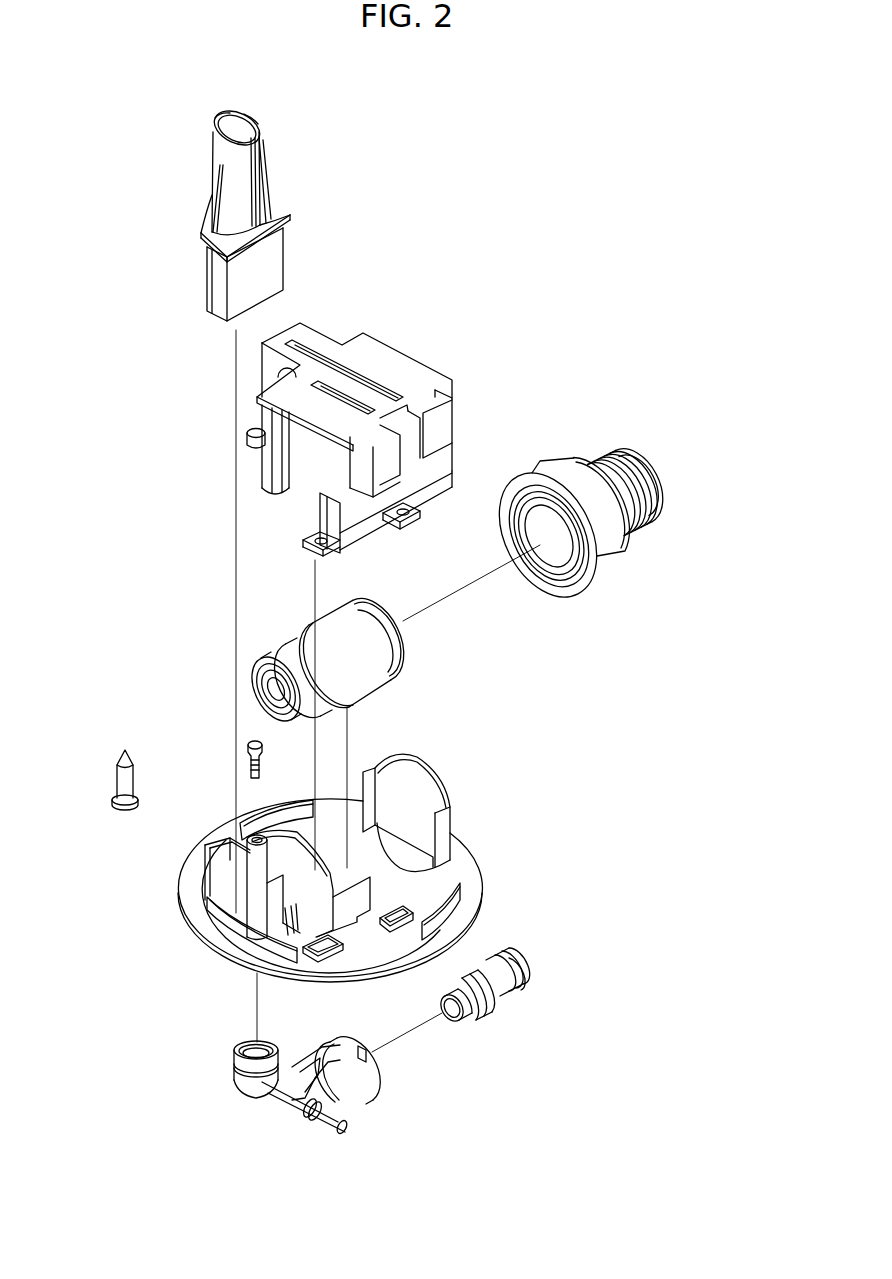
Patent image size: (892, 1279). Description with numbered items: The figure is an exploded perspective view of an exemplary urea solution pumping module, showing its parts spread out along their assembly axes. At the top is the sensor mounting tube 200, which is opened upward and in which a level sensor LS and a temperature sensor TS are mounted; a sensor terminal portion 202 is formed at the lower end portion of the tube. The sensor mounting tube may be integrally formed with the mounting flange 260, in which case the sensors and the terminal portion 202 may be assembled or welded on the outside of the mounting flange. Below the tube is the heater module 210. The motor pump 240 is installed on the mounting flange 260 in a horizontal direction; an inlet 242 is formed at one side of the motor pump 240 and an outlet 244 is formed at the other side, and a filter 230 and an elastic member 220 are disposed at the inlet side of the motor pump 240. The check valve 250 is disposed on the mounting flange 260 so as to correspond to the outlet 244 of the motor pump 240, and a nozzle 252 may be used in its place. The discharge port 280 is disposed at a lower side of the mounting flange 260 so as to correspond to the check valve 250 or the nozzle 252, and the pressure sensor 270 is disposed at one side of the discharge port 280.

The level sensor LS is at (222, 110).
The temperature sensor TS is at (252, 110).
The sensor mounting tube 200 is at (237, 198).
The sensor terminal portion 202 is at (218, 286).
The heater module 210 is at (397, 365).
The elastic member 220 is at (637, 455).
The filter 230 is at (602, 558).
The motor pump 240 is at (410, 664).
The inlet 242 is at (420, 625).
The outlet 244 is at (263, 693).
The check valve 250 is at (248, 753).
The nozzle 252 is at (120, 780).
The mounting flange 260 is at (460, 870).
The pressure sensor 270 is at (500, 1007).
The discharge port 280 is at (247, 1097).